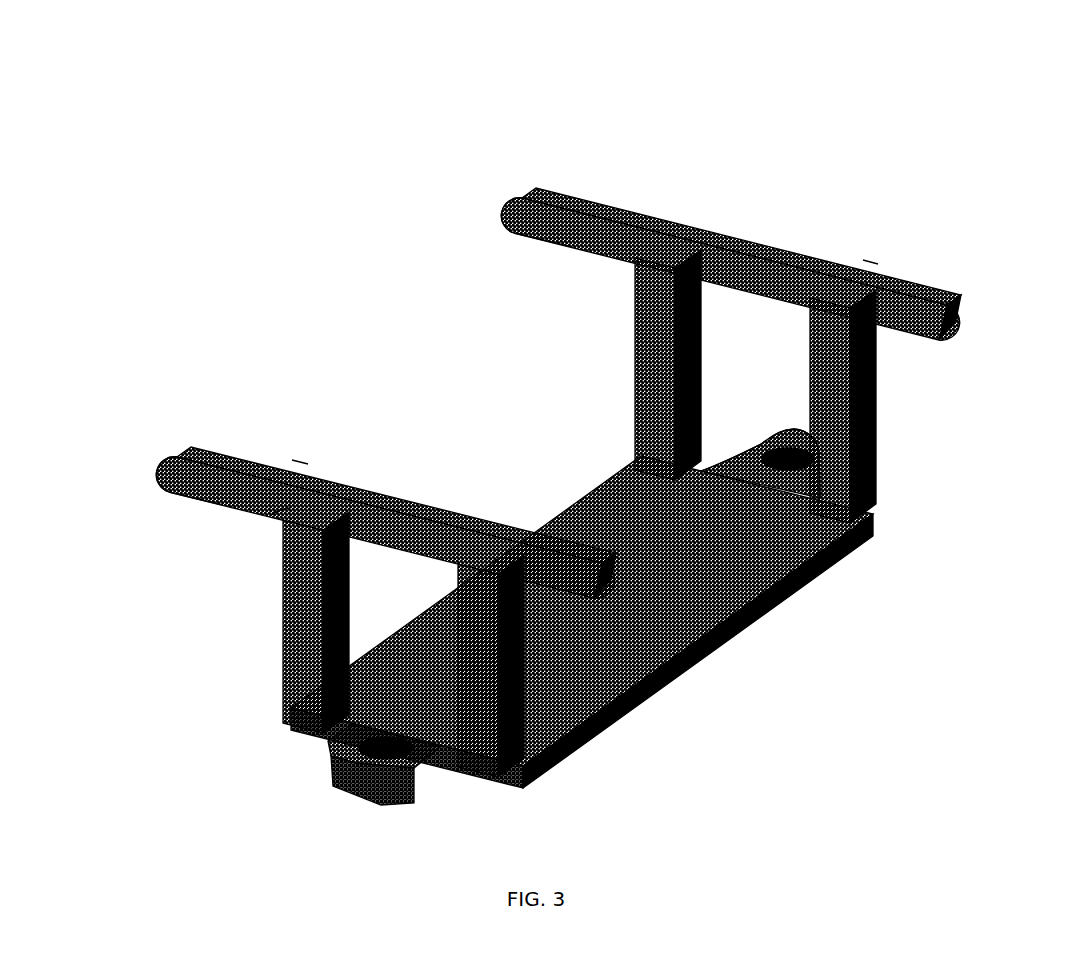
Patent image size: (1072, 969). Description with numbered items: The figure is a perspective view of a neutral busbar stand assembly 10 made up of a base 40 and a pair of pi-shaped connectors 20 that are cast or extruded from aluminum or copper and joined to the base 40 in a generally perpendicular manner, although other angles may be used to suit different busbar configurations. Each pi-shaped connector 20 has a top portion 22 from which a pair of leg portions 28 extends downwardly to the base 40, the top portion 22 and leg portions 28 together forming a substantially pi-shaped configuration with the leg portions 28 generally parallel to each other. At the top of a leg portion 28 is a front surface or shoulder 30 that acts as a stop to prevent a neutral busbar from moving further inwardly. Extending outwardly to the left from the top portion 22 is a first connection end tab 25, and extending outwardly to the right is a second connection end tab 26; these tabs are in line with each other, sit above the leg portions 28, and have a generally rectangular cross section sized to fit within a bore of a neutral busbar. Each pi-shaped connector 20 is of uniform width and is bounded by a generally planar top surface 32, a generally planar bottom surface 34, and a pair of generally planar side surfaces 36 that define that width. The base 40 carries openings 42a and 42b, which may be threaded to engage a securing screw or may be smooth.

The bracket assembly 10 is at (900, 48).
The pi-shaped connector 20 is at (742, 192).
The top portion 22 is at (756, 272).
The first connection end tab 25 is at (518, 192).
The second connection end tab 26 is at (948, 300).
The leg portion 28 is at (875, 440).
The front surface or shoulder 30 is at (276, 588).
The top surface 32 is at (855, 252).
The bottom surface 34 is at (924, 342).
The side surface 36 is at (600, 250).
The base 40 is at (690, 572).
The opening 42a is at (318, 778).
The opening 42b is at (815, 540).